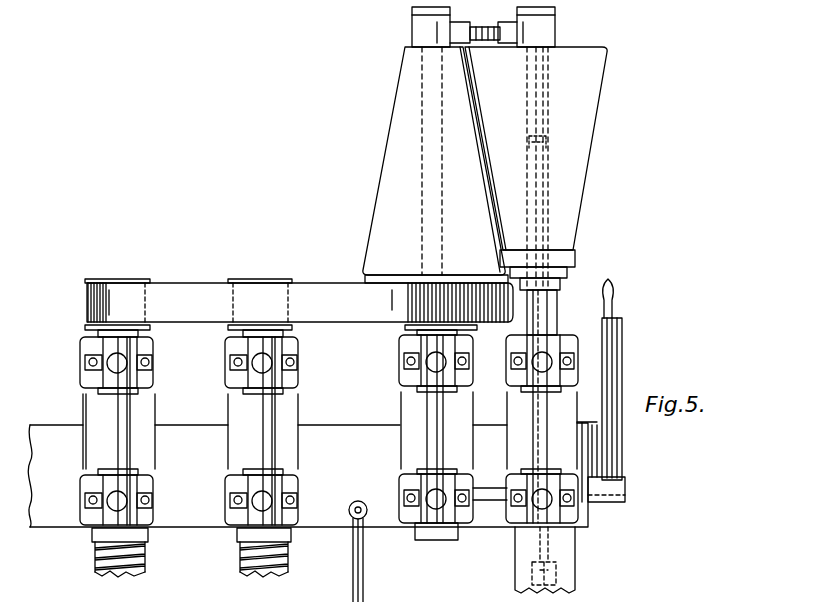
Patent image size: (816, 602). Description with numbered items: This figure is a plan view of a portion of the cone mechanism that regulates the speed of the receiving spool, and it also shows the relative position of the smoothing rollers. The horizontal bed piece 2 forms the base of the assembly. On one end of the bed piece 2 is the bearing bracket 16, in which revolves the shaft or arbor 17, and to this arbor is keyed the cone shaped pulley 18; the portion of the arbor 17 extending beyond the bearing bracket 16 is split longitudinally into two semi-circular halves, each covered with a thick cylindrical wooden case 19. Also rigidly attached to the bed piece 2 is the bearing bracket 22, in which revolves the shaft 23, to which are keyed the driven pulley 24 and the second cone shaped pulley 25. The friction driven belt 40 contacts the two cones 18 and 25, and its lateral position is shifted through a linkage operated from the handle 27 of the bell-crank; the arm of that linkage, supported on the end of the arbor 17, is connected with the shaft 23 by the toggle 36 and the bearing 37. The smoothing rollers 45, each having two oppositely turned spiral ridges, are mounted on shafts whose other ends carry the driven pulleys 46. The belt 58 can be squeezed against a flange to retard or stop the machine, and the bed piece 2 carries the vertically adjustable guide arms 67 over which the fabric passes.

The horizontal bed piece 2 is at (308, 475).
The bearing bracket 16 is at (542, 406).
The shaft or arbor 17 is at (525, 449).
The cone shaped pulley 18 is at (536, 168).
The cylindrical wooden case 19 is at (576, 582).
The bearing bracket 22 is at (399, 402).
The shaft 23 is at (427, 445).
The driven pulley 24 is at (378, 328).
The cone shaped pulley 25 is at (435, 165).
The handle 27 is at (626, 346).
The toggle 36 is at (488, 27).
The bearing 37 is at (411, 38).
The friction driven belt 40 is at (582, 265).
The smoothing roller 45 is at (137, 574).
The driven pulley 46 is at (133, 282).
The belt 58 is at (197, 297).
The guide arm 67 is at (366, 588).